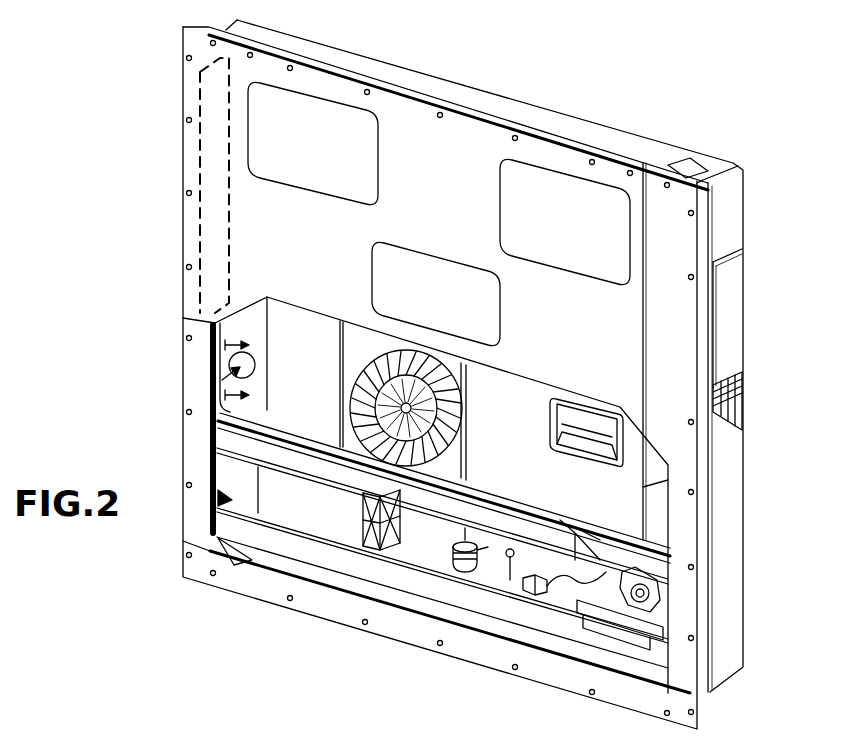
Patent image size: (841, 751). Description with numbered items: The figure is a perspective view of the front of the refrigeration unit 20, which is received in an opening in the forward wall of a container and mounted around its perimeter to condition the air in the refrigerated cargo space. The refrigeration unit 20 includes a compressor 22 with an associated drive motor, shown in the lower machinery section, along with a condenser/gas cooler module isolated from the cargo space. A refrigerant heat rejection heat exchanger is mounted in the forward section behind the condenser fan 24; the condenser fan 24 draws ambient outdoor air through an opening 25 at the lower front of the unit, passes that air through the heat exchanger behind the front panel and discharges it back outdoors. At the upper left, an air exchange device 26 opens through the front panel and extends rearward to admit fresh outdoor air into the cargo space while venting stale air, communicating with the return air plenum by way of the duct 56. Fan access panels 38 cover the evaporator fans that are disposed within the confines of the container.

The refrigeration unit 20 is at (152, 300).
The duct 56 is at (213, 252).
The air exchange device 26 is at (213, 381).
The condenser fan 24 is at (340, 428).
The opening 25 is at (400, 600).
The compressor 22 is at (632, 568).
The fan access panels 38 is at (742, 404).